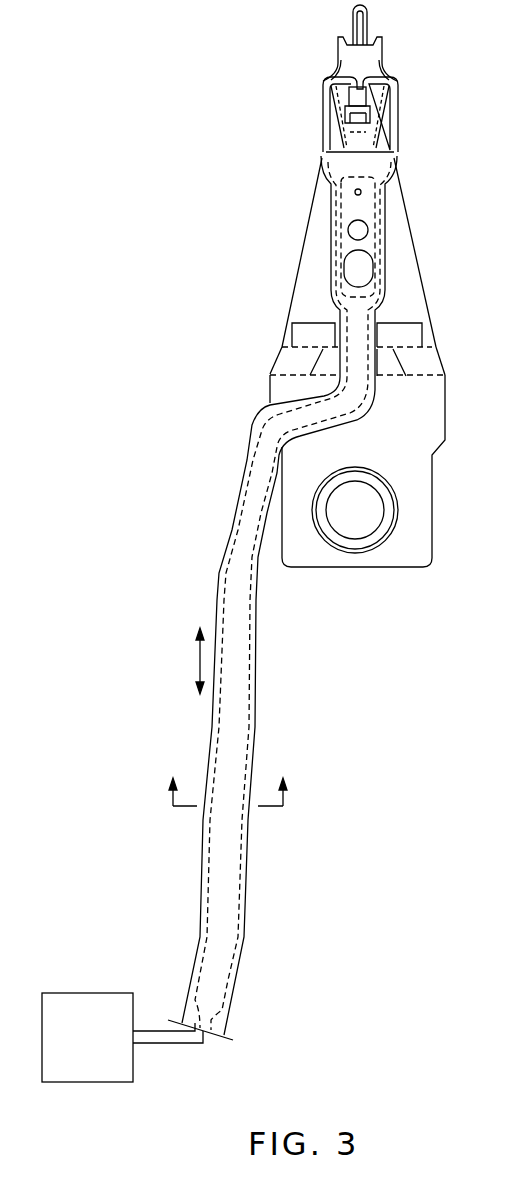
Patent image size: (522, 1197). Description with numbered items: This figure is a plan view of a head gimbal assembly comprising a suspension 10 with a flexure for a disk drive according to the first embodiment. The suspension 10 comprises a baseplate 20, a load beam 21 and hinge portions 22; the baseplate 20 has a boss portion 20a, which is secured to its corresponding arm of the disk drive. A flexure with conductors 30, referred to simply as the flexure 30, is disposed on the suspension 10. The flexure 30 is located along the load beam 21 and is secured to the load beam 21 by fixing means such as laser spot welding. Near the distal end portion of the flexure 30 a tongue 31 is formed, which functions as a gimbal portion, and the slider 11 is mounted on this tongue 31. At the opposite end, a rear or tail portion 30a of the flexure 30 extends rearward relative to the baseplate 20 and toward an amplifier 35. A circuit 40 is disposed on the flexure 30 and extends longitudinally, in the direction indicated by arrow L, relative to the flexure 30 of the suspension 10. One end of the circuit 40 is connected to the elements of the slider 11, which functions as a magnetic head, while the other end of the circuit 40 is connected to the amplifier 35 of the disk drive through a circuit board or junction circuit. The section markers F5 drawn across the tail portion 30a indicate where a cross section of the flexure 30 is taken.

The suspension 10 is at (234, 207).
The slider 11 is at (362, 97).
The tongue 31 is at (360, 118).
The flexure with conductors 30 is at (378, 218).
The rear portion (tail portion) of the flexure 30a is at (212, 741).
The circuit 40 is at (245, 676).
The load beam 21 is at (402, 286).
The hinge portions 22 is at (427, 362).
The baseplate 20 is at (428, 431).
The boss portion 20a is at (387, 520).
The amplifier 35 is at (88, 1002).
The arrow L (longitudinal direction) L is at (196, 664).
The section line F5 is at (228, 781).